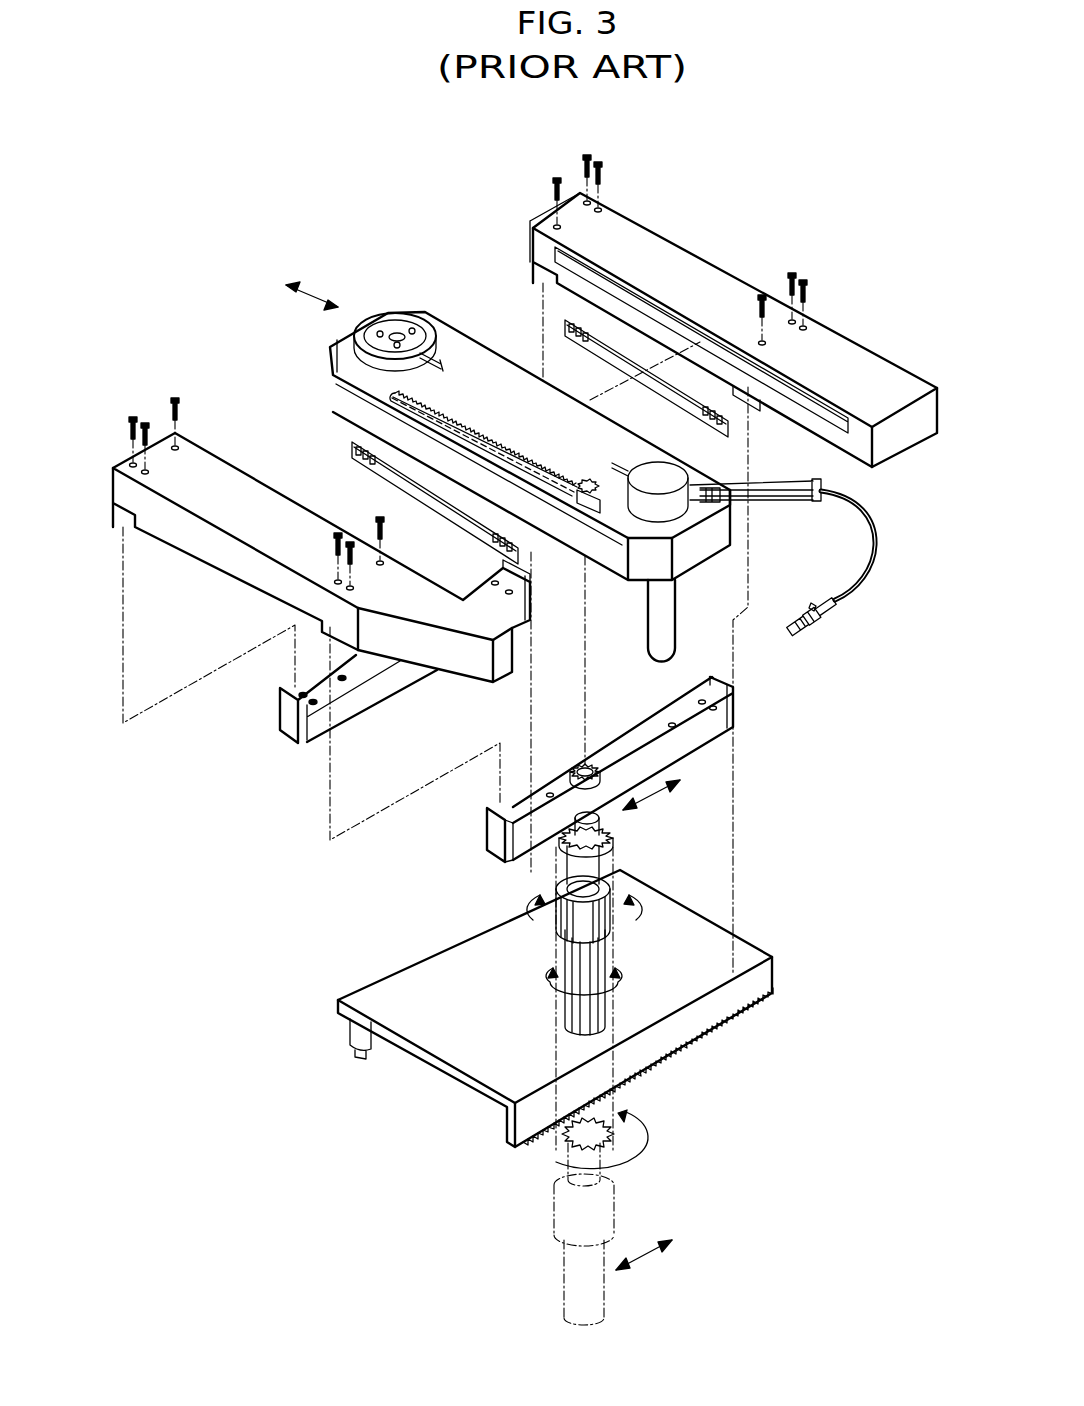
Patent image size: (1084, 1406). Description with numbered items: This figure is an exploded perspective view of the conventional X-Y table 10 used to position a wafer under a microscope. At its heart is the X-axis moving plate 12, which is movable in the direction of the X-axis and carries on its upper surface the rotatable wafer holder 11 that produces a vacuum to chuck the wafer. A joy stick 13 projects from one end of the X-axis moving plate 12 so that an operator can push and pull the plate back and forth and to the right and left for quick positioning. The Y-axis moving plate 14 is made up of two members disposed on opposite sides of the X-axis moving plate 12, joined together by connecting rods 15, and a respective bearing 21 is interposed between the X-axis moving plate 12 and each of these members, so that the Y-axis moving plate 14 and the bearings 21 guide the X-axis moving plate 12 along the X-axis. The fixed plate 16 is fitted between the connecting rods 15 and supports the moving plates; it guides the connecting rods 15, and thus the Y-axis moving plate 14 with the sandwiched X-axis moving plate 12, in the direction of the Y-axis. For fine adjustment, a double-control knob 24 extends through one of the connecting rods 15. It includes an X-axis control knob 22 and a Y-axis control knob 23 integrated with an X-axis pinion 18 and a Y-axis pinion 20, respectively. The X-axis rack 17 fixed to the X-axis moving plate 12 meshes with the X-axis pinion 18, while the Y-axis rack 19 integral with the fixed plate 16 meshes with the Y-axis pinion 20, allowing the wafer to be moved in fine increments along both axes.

The X-Y table 10 is at (845, 253).
The wafer holder 11 is at (397, 313).
The X-axis moving plate 12 is at (460, 325).
The joy stick 13 is at (678, 608).
The Y-axis moving plate 14 is at (866, 352).
The connecting rods 15 is at (643, 729).
The fixed plate 16 is at (748, 944).
The X-axis rack 17 is at (460, 417).
The X-axis pinion 18 is at (578, 762).
The Y-axis rack 19 is at (770, 1007).
The Y-axis pinion 20 is at (609, 825).
The bearing 21 is at (612, 357).
The X-axis control knob 22 is at (563, 917).
The Y-axis control knob 23 is at (565, 950).
The double-control knob 24 is at (353, 907).